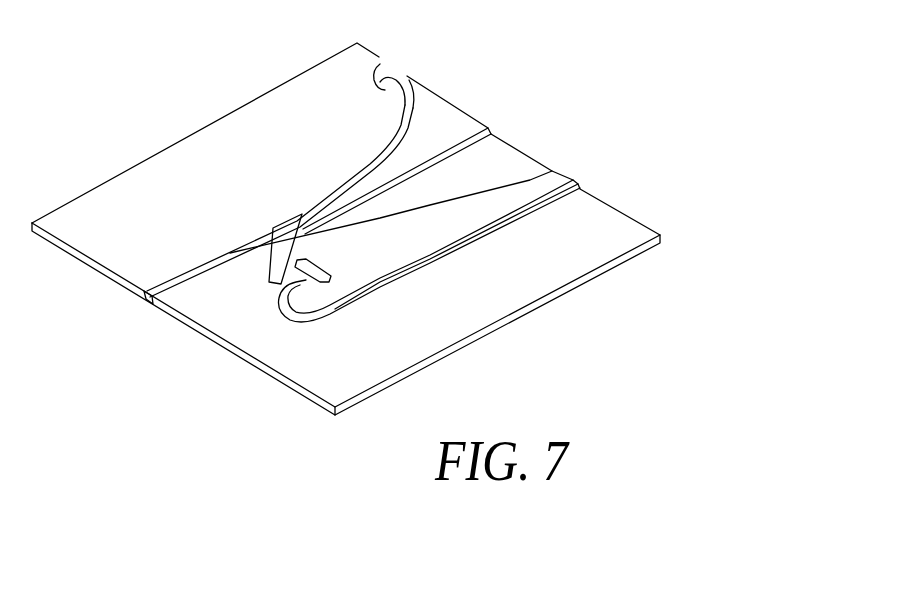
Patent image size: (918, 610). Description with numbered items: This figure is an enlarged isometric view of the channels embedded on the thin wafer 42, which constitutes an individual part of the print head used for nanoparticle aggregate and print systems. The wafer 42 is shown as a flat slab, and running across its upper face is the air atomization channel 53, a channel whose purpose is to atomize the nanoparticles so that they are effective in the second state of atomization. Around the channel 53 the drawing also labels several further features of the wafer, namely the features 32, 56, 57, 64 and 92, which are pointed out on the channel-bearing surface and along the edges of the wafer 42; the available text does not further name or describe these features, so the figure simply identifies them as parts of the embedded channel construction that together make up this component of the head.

The fluid port / channel end hook 32 is at (410, 75).
The thin wafer 42 is at (463, 307).
The air atomization channel 53 is at (502, 226).
The cross bar / slot 56 is at (276, 259).
The channel outlet at edge 57 is at (155, 303).
The raised platform 64 is at (480, 155).
The channel groove 92 is at (183, 272).